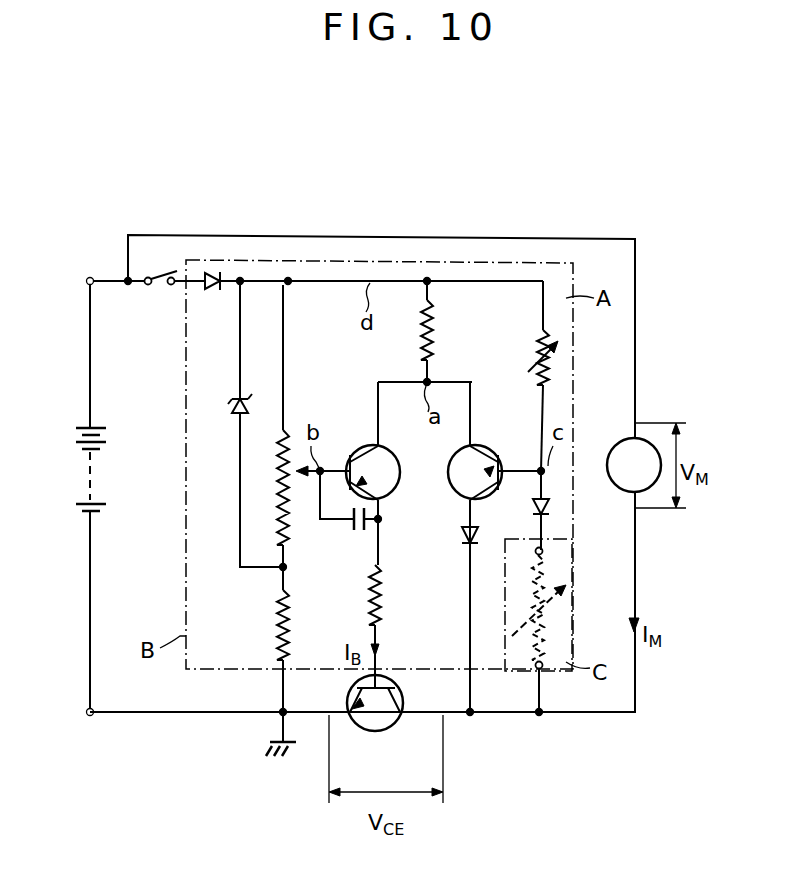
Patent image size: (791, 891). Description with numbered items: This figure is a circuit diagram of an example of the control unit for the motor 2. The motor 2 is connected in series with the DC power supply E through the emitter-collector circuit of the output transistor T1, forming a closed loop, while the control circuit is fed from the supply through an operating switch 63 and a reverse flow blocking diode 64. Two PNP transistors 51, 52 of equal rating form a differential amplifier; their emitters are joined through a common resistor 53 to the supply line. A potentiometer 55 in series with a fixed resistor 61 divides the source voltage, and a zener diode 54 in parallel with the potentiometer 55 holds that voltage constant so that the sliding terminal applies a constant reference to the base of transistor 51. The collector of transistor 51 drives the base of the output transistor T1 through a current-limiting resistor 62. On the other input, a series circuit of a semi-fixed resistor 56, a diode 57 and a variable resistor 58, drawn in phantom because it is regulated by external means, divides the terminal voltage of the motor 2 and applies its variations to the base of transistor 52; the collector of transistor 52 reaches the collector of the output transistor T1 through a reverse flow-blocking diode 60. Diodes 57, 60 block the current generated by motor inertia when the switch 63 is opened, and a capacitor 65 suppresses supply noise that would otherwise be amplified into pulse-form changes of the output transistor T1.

The motor 2 is at (620, 448).
The PNP transistor 51 is at (402, 452).
The PNP transistor 52 is at (452, 476).
The common resistor 53 is at (432, 336).
The zener diode 54 is at (233, 410).
The potentiometer 55 is at (278, 493).
The semi-fixed resistor 56 is at (552, 362).
The diode 57 is at (552, 507).
The variable resistor 58 is at (544, 628).
The diode 60 is at (462, 538).
The fixed resistor 61 is at (276, 634).
The current-limiting resistor 62 is at (383, 608).
The operating switch 63 is at (157, 288).
The reverse flow blocking diode 64 is at (212, 290).
The capacitor 65 is at (355, 534).
The battery E is at (80, 478).
The output transistor T1 is at (378, 732).